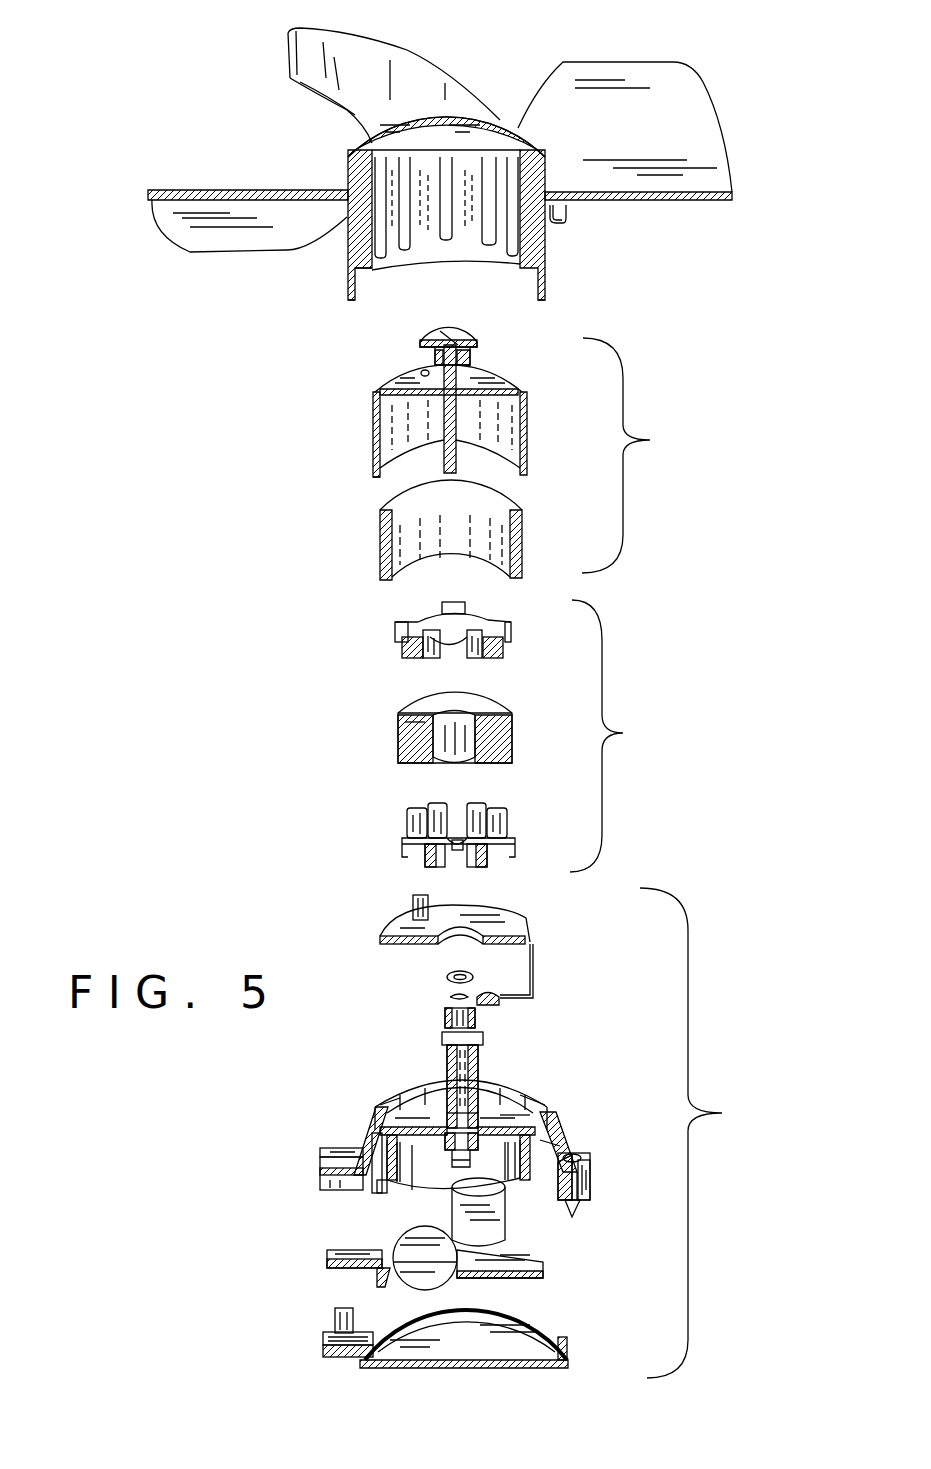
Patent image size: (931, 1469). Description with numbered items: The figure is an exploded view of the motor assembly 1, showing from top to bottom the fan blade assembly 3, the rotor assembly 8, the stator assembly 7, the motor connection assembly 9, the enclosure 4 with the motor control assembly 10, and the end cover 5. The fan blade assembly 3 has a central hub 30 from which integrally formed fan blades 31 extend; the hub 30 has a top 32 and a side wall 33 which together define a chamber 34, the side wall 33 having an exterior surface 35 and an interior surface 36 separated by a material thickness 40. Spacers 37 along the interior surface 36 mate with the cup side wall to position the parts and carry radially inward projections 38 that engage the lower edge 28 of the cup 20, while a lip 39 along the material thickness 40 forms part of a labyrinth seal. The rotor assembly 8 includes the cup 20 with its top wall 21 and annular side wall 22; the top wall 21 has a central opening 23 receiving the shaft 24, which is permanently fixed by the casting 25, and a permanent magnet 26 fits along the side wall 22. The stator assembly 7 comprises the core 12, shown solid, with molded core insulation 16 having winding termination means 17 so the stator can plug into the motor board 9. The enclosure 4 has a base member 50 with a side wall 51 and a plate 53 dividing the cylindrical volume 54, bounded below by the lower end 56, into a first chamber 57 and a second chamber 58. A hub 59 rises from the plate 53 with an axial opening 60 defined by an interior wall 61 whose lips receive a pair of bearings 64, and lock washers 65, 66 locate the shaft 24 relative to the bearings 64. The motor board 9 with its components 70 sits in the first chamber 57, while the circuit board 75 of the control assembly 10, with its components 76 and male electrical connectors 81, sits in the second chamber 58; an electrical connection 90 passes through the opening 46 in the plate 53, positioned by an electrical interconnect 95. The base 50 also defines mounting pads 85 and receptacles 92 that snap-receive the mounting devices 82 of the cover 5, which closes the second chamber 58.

The motor assembly 1 is at (596, 30).
The fan blade assembly 3 is at (556, 264).
The enclosure 4 is at (555, 1137).
The end cover 5 is at (572, 1362).
The stator assembly 7 is at (609, 736).
The rotor assembly 8 is at (630, 455).
The motor connection assembly 9 is at (520, 912).
The motor control assembly 10 is at (699, 1133).
The core 12 is at (497, 708).
The molded core insulation 16 is at (510, 633).
The winding termination means 17 is at (430, 860).
The cup 20 is at (527, 425).
The top wall 21 is at (493, 383).
The annular side wall 22 is at (373, 437).
The central opening 23 is at (437, 388).
The shaft 24 is at (523, 462).
The casting 25 is at (477, 332).
The permanent magnet 26 is at (380, 540).
The lower edge 28 is at (378, 477).
The central hub 30 is at (490, 137).
The fan blades 31 is at (673, 100).
The top 32 is at (446, 137).
The side wall 33 is at (350, 263).
The chamber 34 is at (350, 320).
The exterior surface 35 is at (545, 240).
The interior surface 36 is at (410, 252).
The spacers 37 is at (377, 185).
The projections 38 is at (508, 255).
The lip 39 is at (410, 250).
The material thickness 40 is at (347, 218).
The opening 46 is at (537, 1113).
The base member 50 is at (587, 1167).
The side wall 51 is at (560, 1143).
The plate 53 is at (535, 1103).
The cylindrical volume 54 is at (383, 1185).
The lower end 56 is at (565, 1215).
The first chamber 57 is at (507, 1087).
The second chamber 58 is at (412, 1186).
The hub 59 is at (482, 1048).
The axial opening 60 is at (463, 1070).
The interior wall 61 is at (483, 1080).
The bearings 64 is at (477, 1017).
The lock washer 65 is at (473, 975).
The lock washer 66 is at (580, 1157).
The components 70 is at (412, 902).
The circuit board 75 is at (533, 1265).
The components 76 is at (352, 1284).
The male electrical connectors 81 is at (328, 1263).
The mounting devices 82 is at (335, 1325).
The mounting pads 85 is at (587, 1190).
The electrical connection 90 is at (531, 975).
The receptacles 92 is at (350, 1190).
The electrical interconnect 95 is at (505, 1205).